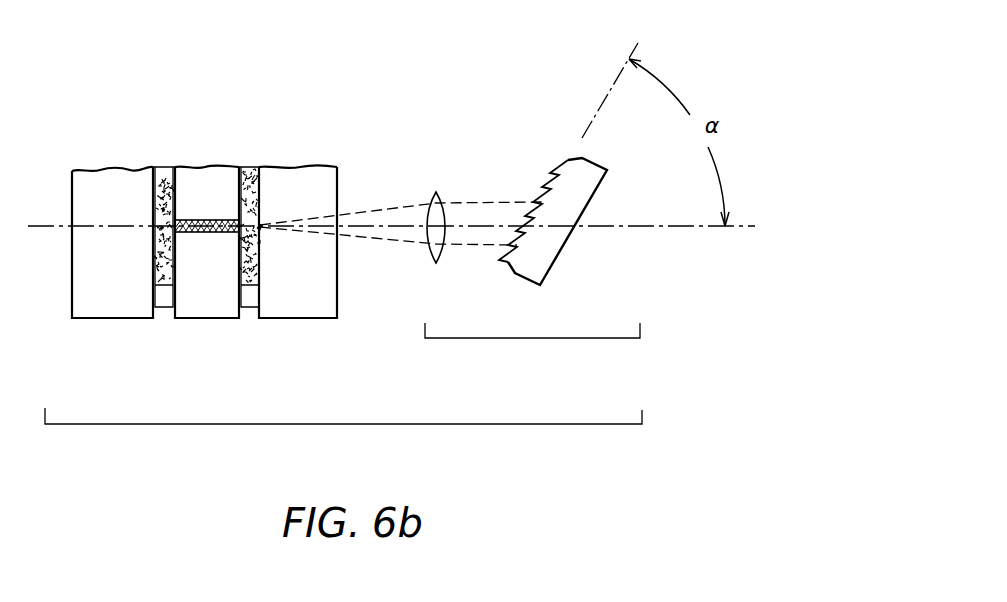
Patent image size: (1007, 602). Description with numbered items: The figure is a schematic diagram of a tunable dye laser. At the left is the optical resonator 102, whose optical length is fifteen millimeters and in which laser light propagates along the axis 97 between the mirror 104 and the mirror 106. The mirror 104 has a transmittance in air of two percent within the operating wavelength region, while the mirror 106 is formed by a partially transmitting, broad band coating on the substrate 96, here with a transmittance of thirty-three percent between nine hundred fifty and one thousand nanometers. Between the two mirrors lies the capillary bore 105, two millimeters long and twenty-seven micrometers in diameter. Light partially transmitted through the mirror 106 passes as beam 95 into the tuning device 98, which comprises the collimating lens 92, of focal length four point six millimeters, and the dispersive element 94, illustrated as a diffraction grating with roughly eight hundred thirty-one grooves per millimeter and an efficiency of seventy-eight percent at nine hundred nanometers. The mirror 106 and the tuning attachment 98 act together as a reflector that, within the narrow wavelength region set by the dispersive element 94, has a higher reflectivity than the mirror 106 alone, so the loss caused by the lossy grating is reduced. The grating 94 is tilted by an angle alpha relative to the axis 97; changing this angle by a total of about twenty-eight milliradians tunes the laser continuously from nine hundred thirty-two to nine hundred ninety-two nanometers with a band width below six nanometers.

The collimating lens 92 is at (437, 250).
The dispersive element 94 is at (587, 190).
The laser beam 95 is at (372, 208).
The substrate 96 is at (313, 312).
The axis 97 is at (47, 225).
The tuning device 98 is at (533, 338).
The optical resonator 102 is at (337, 424).
The mirror 104 is at (163, 193).
The capillary bore 105 is at (203, 232).
The mirror 106 is at (257, 180).